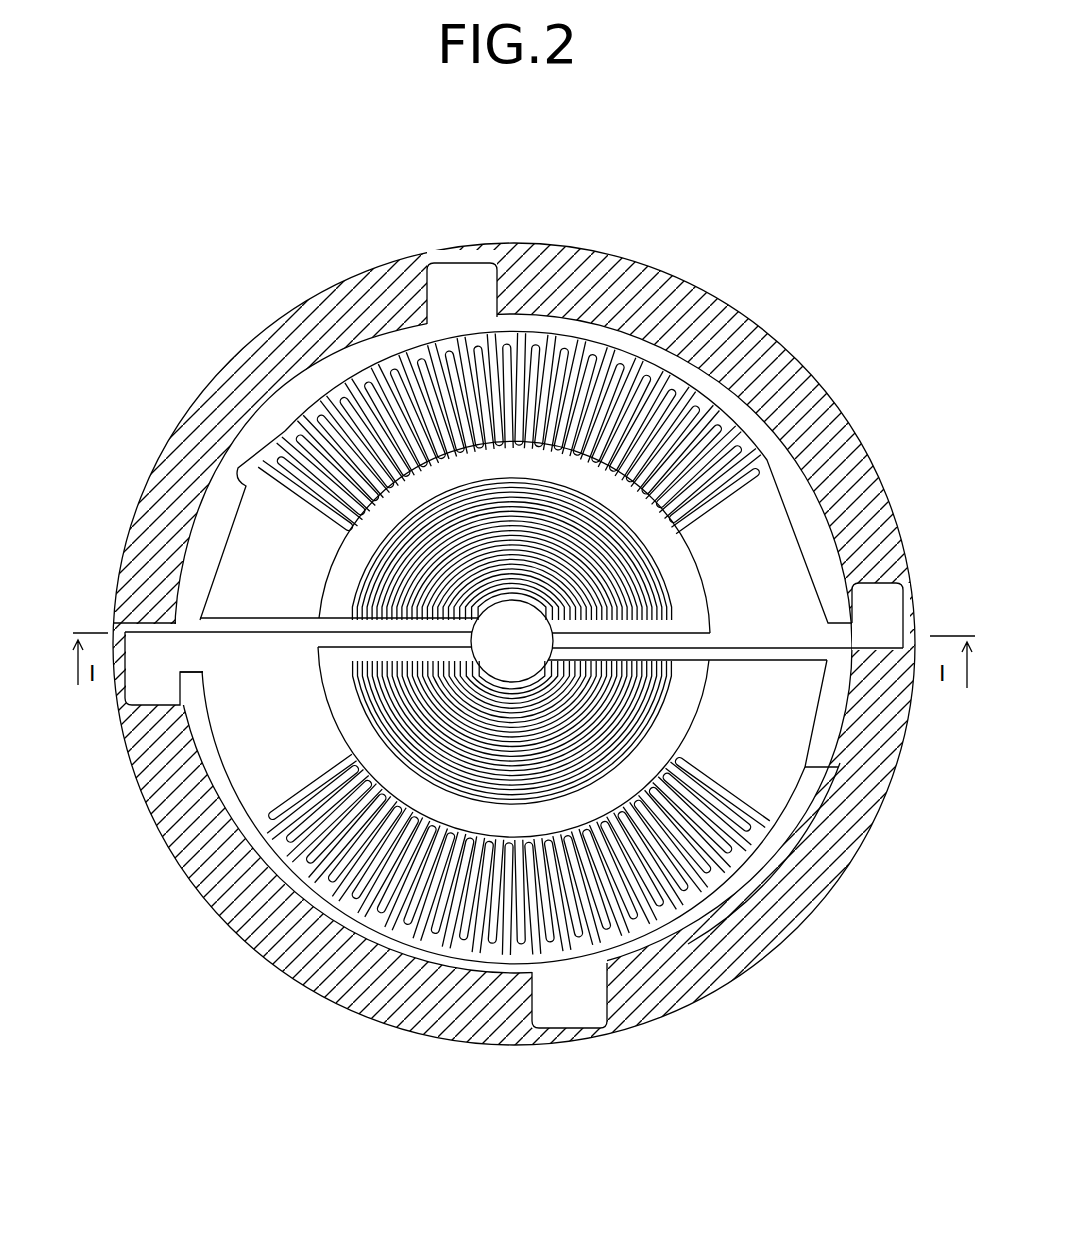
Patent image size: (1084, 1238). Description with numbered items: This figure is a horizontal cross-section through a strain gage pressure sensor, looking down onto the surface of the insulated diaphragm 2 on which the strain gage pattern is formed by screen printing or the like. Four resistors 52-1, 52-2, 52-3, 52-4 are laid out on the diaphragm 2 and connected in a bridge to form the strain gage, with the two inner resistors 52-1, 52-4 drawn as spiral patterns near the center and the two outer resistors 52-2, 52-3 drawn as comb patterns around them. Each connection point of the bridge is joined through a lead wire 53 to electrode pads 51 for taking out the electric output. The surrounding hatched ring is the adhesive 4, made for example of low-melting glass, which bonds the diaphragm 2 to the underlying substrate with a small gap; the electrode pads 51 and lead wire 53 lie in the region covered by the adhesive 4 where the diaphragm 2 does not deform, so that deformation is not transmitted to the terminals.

The insulated diaphragm 2 is at (828, 735).
The adhesive 4 is at (847, 450).
The electrode pads 51 is at (468, 283).
The resistor 52-1 is at (435, 787).
The resistor 52-2 is at (457, 940).
The resistor 52-3 is at (680, 393).
The resistor 52-4 is at (653, 567).
The lead wire 53 is at (377, 335).